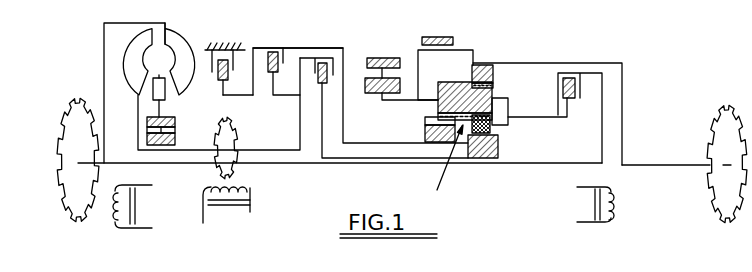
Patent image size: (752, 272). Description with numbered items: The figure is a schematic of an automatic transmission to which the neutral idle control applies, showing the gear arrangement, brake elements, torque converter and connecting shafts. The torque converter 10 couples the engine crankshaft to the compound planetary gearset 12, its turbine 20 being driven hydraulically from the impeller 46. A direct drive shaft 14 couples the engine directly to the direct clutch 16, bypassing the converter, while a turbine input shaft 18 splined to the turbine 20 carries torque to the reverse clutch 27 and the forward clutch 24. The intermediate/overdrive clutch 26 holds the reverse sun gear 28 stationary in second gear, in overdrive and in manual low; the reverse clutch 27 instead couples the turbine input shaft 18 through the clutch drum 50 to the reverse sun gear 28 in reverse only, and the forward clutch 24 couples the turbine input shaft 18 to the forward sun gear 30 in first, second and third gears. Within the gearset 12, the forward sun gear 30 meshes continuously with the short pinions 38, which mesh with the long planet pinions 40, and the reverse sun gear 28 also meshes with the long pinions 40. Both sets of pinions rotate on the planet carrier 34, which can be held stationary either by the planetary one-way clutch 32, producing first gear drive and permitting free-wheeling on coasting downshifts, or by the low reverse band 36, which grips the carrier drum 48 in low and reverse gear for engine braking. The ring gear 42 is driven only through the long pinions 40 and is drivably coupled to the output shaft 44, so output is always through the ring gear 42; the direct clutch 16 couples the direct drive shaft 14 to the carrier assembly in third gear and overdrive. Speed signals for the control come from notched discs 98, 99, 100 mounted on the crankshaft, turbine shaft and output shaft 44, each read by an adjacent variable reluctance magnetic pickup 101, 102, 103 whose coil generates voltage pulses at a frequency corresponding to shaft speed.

The torque converter 10 is at (178, 25).
The compound planetary gearset 12 is at (447, 171).
The direct drive shaft 14 is at (173, 165).
The direct clutch 16 is at (572, 98).
The turbine input shaft 18 is at (183, 151).
The turbine 20 is at (125, 62).
The forward clutch 24 is at (326, 67).
The intermediate/overdrive clutch 26 is at (220, 80).
The reverse clutch 27 is at (276, 51).
The reverse sun gear 28 is at (425, 133).
The forward sun gear 30 is at (487, 159).
The planetary one-way clutch 32 is at (368, 66).
The planet carrier 34 is at (508, 107).
The low reverse band 36 is at (453, 41).
The short pinions 38 is at (493, 130).
The long planet pinions 40 is at (450, 85).
The ring gear 42 is at (495, 72).
The output shaft 44 is at (646, 163).
The impeller 46 is at (197, 45).
The carrier drum 48 is at (478, 52).
The clutch drum 50 is at (323, 48).
The disc 98 is at (88, 103).
The disc 99 is at (239, 134).
The disc 100 is at (707, 187).
The variable reluctance magnetic pickup 101 is at (140, 228).
The variable reluctance magnetic pickup 102 is at (250, 207).
The variable reluctance magnetic pickup 103 is at (582, 222).